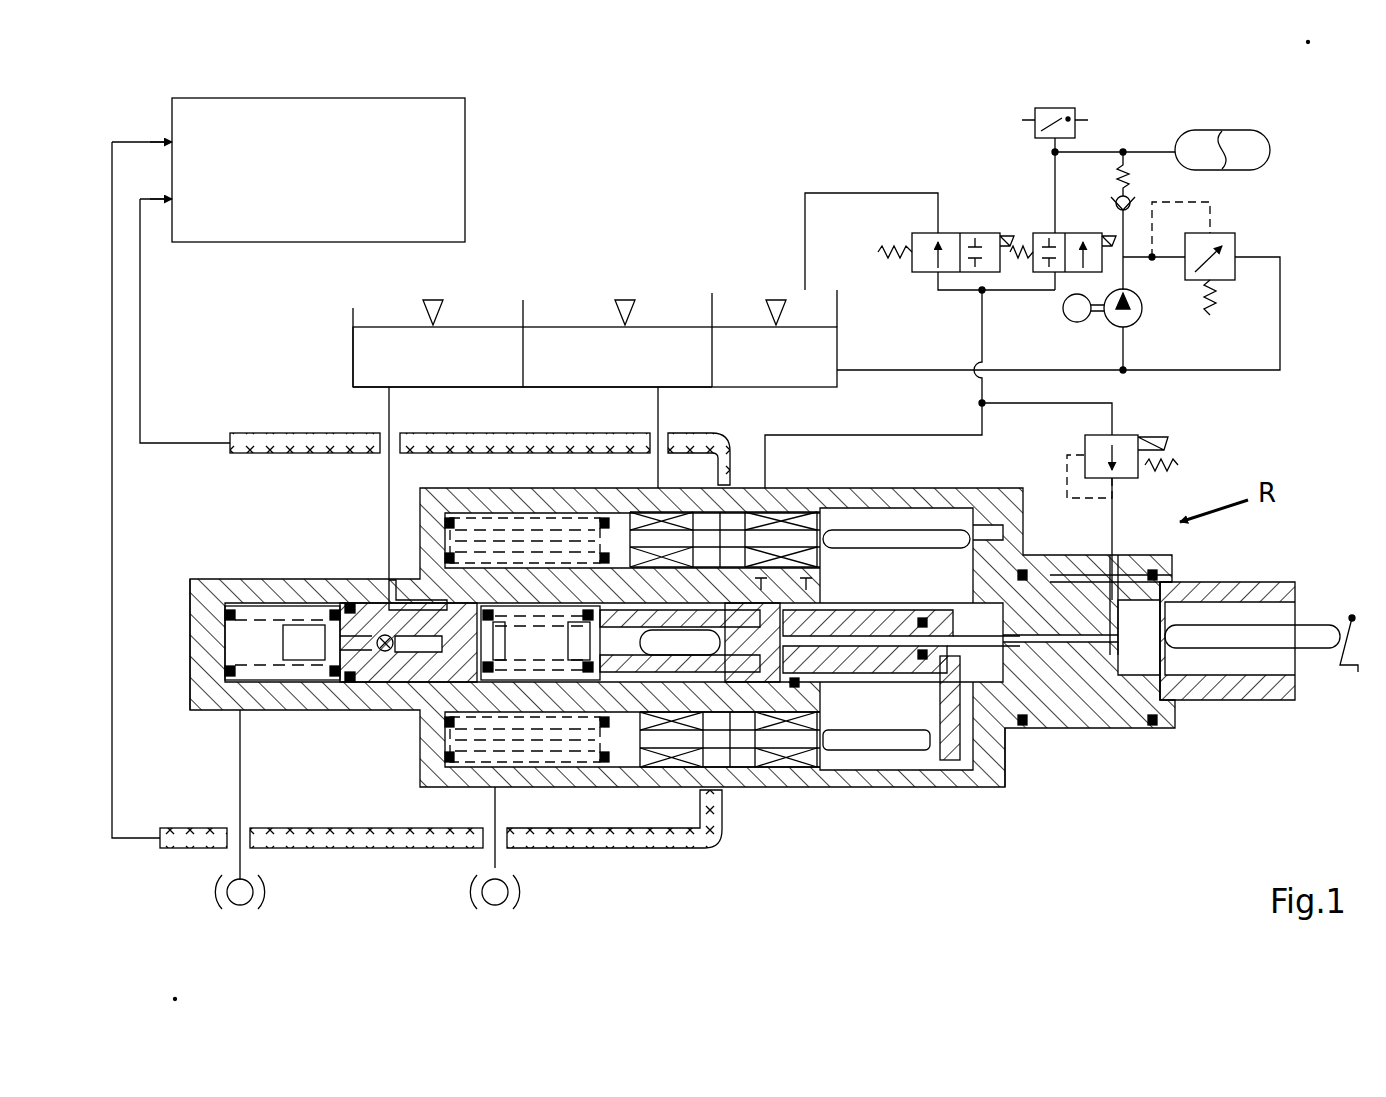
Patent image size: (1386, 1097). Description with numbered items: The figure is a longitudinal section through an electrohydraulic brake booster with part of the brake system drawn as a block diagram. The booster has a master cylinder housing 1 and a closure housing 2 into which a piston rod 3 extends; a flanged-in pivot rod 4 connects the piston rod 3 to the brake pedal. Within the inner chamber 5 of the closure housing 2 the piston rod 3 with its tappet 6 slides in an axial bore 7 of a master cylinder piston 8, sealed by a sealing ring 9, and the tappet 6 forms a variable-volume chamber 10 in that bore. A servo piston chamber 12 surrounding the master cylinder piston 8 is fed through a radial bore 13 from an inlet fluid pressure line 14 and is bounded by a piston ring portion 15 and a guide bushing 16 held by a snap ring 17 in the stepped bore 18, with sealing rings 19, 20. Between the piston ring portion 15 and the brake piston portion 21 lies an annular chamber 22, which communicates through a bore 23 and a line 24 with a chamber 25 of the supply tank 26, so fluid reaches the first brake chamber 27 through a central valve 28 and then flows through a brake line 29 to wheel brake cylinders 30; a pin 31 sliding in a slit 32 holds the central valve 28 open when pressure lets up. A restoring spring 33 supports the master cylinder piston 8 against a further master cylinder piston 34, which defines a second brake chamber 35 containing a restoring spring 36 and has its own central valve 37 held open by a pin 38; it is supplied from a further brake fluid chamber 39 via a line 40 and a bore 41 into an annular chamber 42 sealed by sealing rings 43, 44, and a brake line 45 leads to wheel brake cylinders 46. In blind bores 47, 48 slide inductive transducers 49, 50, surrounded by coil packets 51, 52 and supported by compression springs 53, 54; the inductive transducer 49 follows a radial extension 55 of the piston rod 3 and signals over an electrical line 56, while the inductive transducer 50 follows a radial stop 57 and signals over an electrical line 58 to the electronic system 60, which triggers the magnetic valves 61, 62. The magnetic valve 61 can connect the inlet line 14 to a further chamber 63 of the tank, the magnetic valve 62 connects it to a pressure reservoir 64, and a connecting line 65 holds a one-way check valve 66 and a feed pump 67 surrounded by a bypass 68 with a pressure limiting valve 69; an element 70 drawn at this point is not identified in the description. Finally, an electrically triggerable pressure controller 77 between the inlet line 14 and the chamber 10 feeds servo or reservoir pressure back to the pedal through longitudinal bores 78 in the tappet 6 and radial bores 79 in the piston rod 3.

The master cylinder housing 1 is at (278, 714).
The closure housing 2 is at (940, 480).
The piston rod 3 is at (1080, 685).
The pivot rod 4 is at (1302, 634).
The inner chamber 5 is at (985, 752).
The tappet 6 is at (900, 612).
The axial bore 7 is at (858, 675).
The master cylinder piston 8 is at (668, 648).
The sealing ring 9 is at (920, 662).
The variable-volume chamber 10 is at (815, 610).
The servo piston chamber 12 is at (805, 590).
The radial bore 13 is at (772, 500).
The inlet fluid pressure line 14 is at (868, 440).
The piston ring portion 15 is at (672, 700).
The guide bushing 16 is at (828, 682).
The snap ring 17 is at (805, 592).
The stepped bore 18 is at (690, 585).
The sealing ring 19 is at (795, 722).
The sealing ring 20 is at (748, 520).
The brake piston portion 21 is at (578, 600).
The annular chamber 22 is at (690, 654).
The bore 23 is at (650, 520).
The line 24 is at (662, 415).
The chamber 25 is at (553, 330).
The supply tank 26 is at (350, 326).
The first brake chamber 27 is at (482, 767).
The central valve 28 is at (600, 682).
The brake line 29 is at (490, 852).
The wheel brake cylinders 30 is at (516, 888).
The pin 31 is at (612, 590).
The slit 32 is at (632, 667).
The restoring spring 33 is at (528, 610).
The further master cylinder piston 34 is at (403, 684).
The second brake chamber 35 is at (228, 655).
The restoring spring 36 is at (250, 608).
The central valve 37 is at (337, 612).
The pin 38 is at (385, 635).
The further brake fluid chamber 39 is at (460, 337).
The line 40 is at (393, 418).
The bore 41 is at (395, 580).
The annular chamber 42 is at (397, 684).
The sealing ring 43 is at (357, 678).
The sealing ring 44 is at (432, 722).
The brake line 45 is at (240, 767).
The wheel brake cylinders 46 is at (262, 888).
The blind bore 47 is at (433, 520).
The blind bore 48 is at (445, 762).
The inductive transducer 49 is at (800, 520).
The inductive transducer 50 is at (918, 775).
The coil packet 51 is at (790, 578).
The coil packet 52 is at (760, 767).
The compression spring 53 is at (480, 520).
The compression spring 54 is at (535, 757).
The radial extension 55 is at (992, 546).
The electrical line 56 is at (505, 435).
The radial stop 57 is at (975, 745).
The electrical line 58 is at (720, 846).
The electronic system 60 is at (252, 215).
The magnetic valve 61 is at (467, 132).
The magnetic valve 62 is at (467, 158).
The further chamber 63 is at (828, 338).
The pressure reservoir 64 is at (1262, 158).
The connecting line 65 is at (1100, 152).
The one-way check valve 66 is at (1134, 195).
The feed pump 67 is at (467, 183).
The bypass 68 is at (1280, 292).
The pressure limiting valve 69 is at (1238, 243).
The pressure switch 70 is at (470, 110).
The pressure controller 77 is at (467, 210).
The longitudinal bores 78 is at (1047, 640).
The radial bores 79 is at (1112, 598).